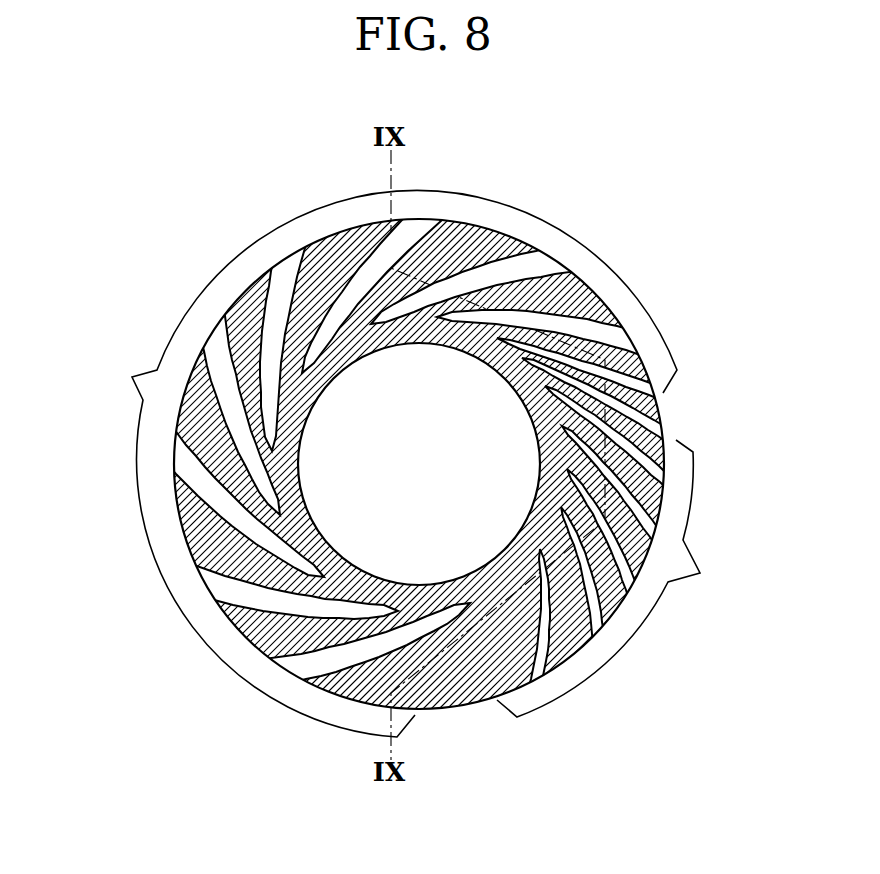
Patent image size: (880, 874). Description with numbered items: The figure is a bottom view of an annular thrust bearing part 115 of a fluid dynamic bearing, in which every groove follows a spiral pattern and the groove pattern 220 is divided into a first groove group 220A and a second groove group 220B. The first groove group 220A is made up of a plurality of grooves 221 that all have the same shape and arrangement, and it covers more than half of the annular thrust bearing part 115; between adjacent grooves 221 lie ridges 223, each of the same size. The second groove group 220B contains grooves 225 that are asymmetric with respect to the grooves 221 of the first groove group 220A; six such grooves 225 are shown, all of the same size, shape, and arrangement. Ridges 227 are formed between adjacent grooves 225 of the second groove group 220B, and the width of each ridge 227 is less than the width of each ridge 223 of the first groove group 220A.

The thrust bearing part 115 is at (655, 265).
The impeller blade assembly 220 is at (440, 440).
The first groove group 220A is at (346, 443).
The second groove group 220B is at (586, 515).
The grooves 221 is at (217, 340).
The ridges 223 is at (178, 508).
The groove 225 is at (598, 400).
The ridges 227 is at (581, 369).